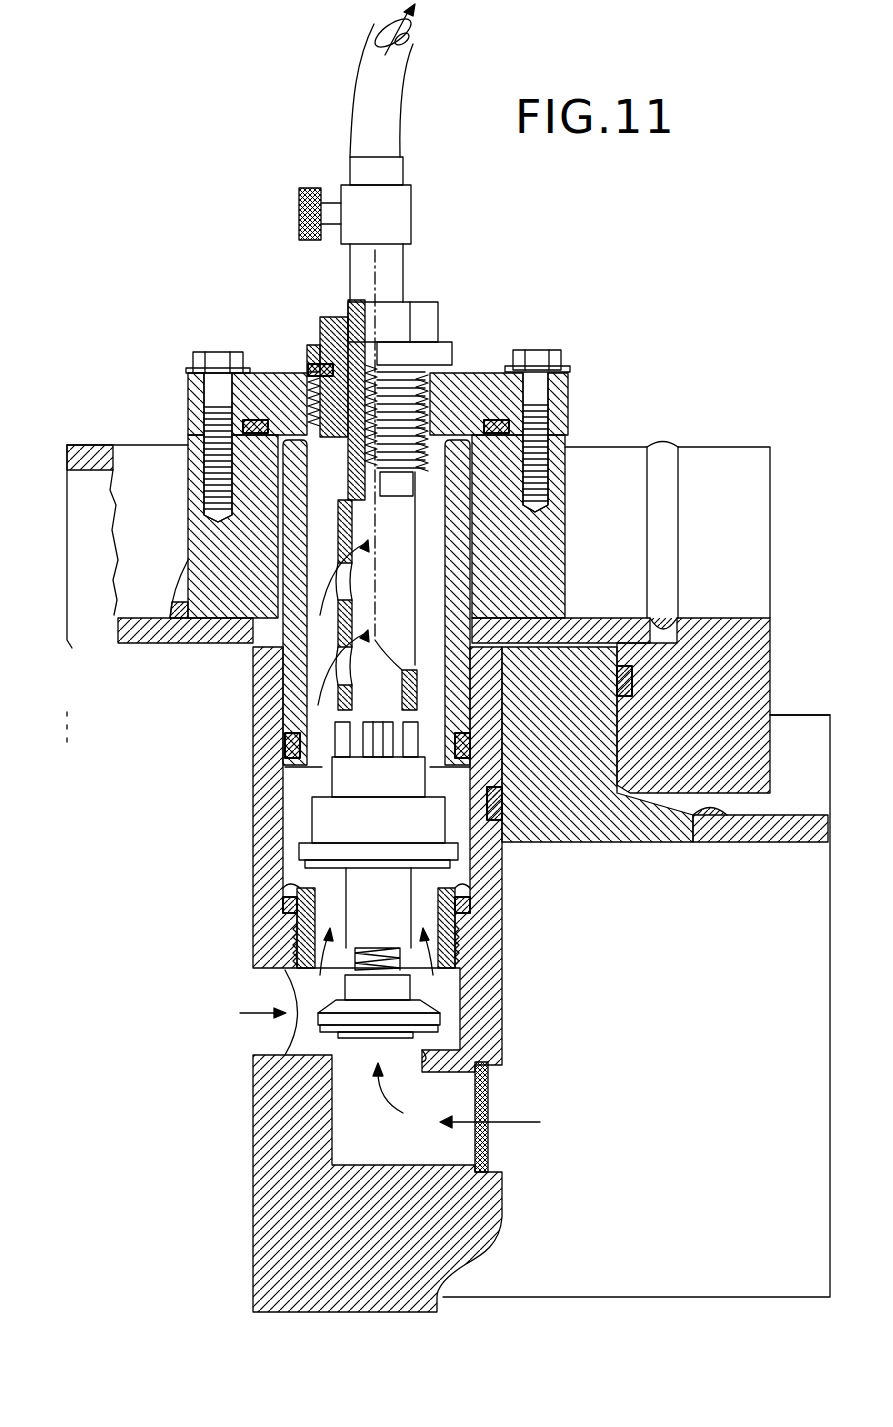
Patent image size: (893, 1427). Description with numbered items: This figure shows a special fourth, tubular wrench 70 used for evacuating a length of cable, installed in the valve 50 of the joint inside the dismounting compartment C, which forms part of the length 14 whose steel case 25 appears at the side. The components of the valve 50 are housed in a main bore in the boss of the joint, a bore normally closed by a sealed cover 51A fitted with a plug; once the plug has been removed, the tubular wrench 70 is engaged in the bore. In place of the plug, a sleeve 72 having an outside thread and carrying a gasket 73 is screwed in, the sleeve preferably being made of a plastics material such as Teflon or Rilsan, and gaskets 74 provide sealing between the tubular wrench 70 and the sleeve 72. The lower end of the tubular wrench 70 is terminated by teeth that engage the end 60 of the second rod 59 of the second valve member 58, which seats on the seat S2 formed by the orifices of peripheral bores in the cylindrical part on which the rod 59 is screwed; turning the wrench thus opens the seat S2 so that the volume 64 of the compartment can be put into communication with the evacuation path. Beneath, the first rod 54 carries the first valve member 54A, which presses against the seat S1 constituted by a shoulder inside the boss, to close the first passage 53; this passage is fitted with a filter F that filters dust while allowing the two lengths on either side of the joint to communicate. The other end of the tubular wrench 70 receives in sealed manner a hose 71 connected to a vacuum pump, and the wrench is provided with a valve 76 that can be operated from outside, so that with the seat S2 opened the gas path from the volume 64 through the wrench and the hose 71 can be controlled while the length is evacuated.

The hose 71 is at (376, 96).
The valve 76 is at (398, 216).
The gaskets 74 is at (388, 325).
The sleeve 72 is at (327, 328).
The gasket 73 is at (318, 366).
The sealed cover 51A is at (476, 392).
The valve 50 is at (179, 383).
The dismounting compartment C is at (131, 440).
The tubular wrench 70 is at (343, 628).
The end 60 is at (337, 742).
The second rod 59 is at (318, 818).
The second valve member 58 is at (325, 892).
The first rod 54 is at (347, 968).
The seat S2 is at (468, 892).
The first valve member 54A is at (420, 1012).
The seat S1 is at (425, 1060).
The filter F is at (486, 1100).
The first passage 53 is at (440, 1143).
The volume 64 is at (680, 1039).
The length 14 is at (795, 710).
The steel case 25 is at (752, 830).